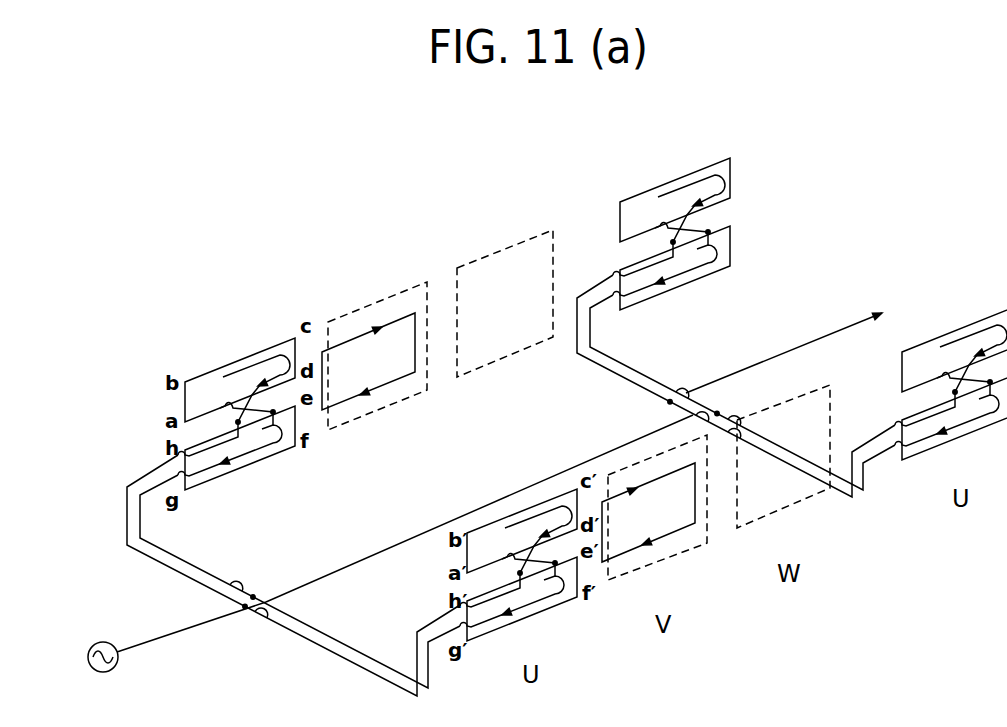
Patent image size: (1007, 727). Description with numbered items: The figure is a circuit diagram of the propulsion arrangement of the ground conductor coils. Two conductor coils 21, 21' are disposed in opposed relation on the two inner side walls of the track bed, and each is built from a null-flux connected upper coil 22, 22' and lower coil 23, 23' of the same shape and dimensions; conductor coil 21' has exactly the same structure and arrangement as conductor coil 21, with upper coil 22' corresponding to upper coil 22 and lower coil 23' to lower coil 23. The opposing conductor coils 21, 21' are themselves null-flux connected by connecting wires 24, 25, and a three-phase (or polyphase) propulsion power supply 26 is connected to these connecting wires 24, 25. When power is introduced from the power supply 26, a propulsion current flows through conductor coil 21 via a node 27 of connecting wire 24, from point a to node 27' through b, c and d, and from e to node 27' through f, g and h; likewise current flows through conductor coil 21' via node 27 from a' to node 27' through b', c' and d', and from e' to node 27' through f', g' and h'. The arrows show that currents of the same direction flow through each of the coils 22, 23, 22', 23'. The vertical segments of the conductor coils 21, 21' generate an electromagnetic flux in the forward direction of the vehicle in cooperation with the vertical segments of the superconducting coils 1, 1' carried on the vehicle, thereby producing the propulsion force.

The superconducting coil 1 is at (379, 321).
The superconducting coil 1' is at (669, 522).
The conductor coil 21 is at (423, 339).
The conductor coil 21' is at (697, 491).
The upper coil 22 is at (206, 380).
The upper coil 22' is at (482, 536).
The lower coil 23 is at (240, 464).
The lower coil 23' is at (536, 599).
The connecting wire 24 is at (325, 628).
The connecting wire 25 is at (325, 648).
The three-phase power supply 26 is at (154, 637).
The node 27 is at (485, 492).
The node 27' is at (477, 523).